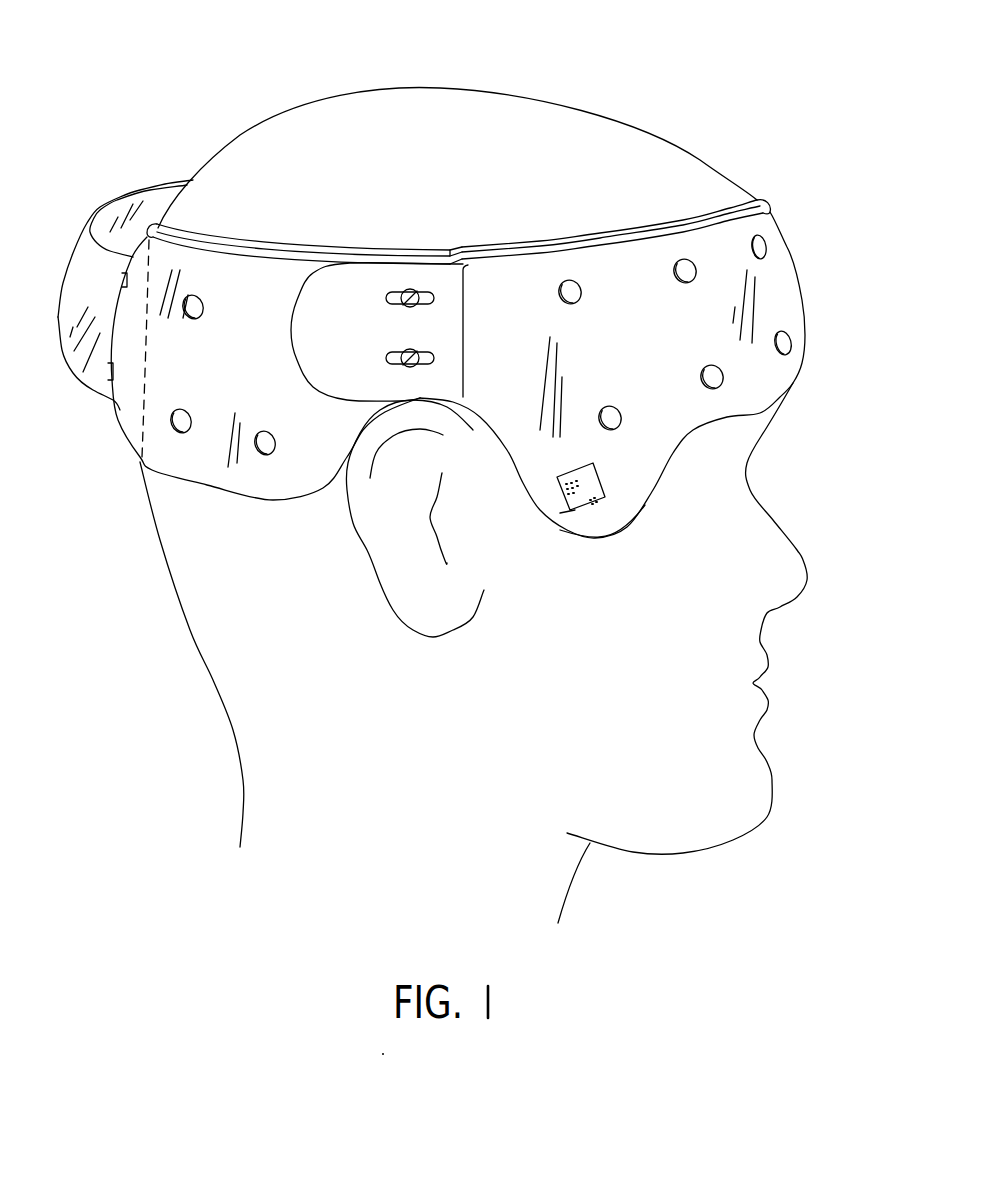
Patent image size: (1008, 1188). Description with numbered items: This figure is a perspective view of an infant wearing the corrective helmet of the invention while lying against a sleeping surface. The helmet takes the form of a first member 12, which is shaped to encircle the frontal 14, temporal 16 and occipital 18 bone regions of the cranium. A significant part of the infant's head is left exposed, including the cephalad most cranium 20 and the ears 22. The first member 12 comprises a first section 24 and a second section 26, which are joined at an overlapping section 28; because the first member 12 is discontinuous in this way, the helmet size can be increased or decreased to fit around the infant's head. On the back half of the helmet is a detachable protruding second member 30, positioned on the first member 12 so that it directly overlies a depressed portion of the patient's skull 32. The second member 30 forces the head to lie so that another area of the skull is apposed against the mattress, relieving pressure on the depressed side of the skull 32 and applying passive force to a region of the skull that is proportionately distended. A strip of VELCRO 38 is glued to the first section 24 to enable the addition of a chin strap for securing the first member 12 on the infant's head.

The first member 12 is at (628, 302).
The frontal bone region 14 is at (782, 283).
The temporal bone region 16 is at (650, 390).
The occipital bone region 18 is at (200, 267).
The cephalad most cranium 20 is at (365, 120).
The ears 22 is at (383, 528).
The first section 24 is at (640, 349).
The second section 26 is at (233, 384).
The overlapping section 28 is at (363, 349).
The second member 30 is at (105, 298).
The depressed portion of the skull 32 is at (133, 410).
The strip of VELCRO 38 is at (590, 503).